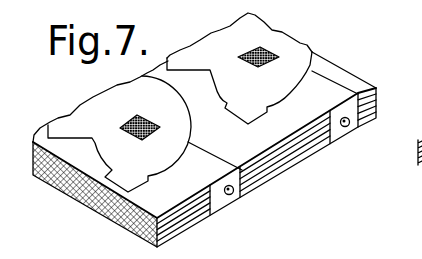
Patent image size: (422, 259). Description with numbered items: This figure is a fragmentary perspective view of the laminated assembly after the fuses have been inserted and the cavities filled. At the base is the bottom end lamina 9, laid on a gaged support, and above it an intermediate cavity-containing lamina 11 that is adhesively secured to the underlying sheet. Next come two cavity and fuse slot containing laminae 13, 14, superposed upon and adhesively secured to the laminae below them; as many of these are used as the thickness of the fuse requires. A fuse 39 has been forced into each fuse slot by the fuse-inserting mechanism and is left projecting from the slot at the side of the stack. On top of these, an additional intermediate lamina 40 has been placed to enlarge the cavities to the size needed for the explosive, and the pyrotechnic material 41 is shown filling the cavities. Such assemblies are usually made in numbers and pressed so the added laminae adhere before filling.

The bottom end lamina 9 is at (376, 117).
The intermediate cavity-containing lamina 11 is at (376, 108).
The cavity and fuse slot containing lamina 13 is at (376, 98).
The cavity and fuse slot containing lamina 14 is at (376, 92).
The fuse 39 is at (229, 196).
The additional intermediate lamina 40 is at (368, 87).
The pyrotechnic material 41 is at (264, 55).